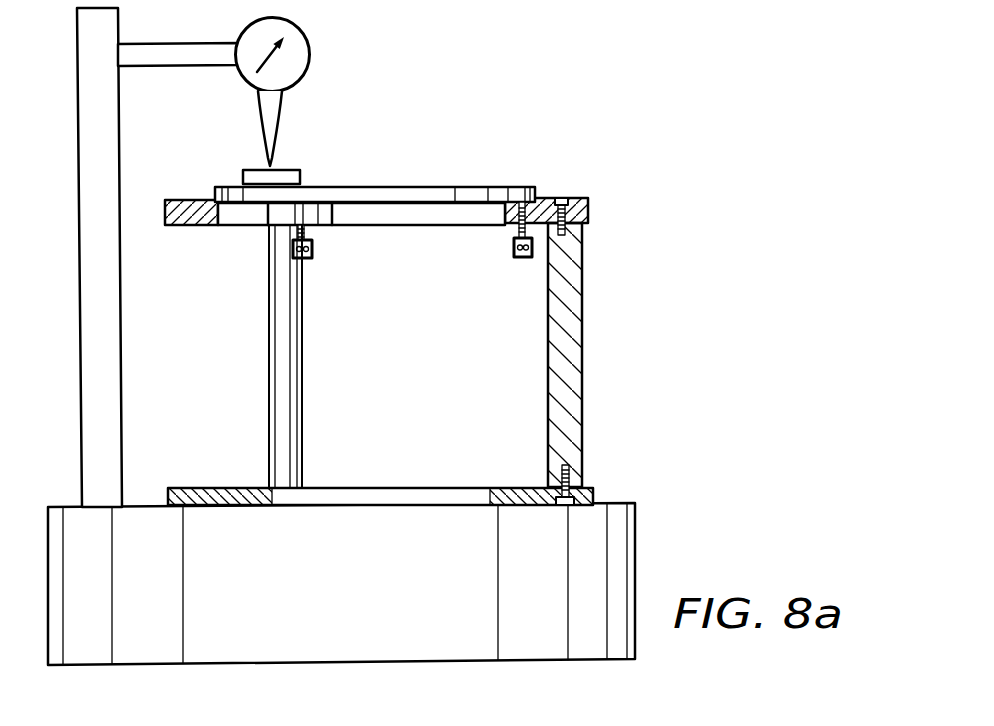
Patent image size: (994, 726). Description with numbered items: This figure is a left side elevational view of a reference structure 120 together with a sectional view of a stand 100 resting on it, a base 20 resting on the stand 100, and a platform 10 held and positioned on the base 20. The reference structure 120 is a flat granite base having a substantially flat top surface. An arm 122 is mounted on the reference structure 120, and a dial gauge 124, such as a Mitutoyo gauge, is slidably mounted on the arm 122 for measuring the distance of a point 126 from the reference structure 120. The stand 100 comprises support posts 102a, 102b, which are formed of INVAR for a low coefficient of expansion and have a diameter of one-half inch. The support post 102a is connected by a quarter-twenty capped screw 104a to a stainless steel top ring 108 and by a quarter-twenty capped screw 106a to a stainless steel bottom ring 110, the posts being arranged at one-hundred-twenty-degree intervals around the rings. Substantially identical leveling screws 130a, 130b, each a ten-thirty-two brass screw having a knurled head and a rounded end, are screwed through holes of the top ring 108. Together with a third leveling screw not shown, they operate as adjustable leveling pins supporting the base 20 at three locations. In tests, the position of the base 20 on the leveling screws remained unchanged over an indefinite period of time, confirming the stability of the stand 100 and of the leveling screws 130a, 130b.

The platform 10 is at (252, 167).
The base 20 is at (390, 185).
The stand 100 is at (620, 381).
The support post 102a is at (583, 262).
The support post 102b is at (270, 402).
The capped screw 104a is at (562, 197).
The capped screw 106a is at (560, 503).
The top ring 108 is at (422, 222).
The bottom ring 110 is at (417, 492).
The reference structure 120 is at (357, 597).
The arm 122 is at (82, 398).
The dial gauge 124 is at (308, 50).
The point 126 is at (276, 143).
The leveling screw 130a is at (513, 258).
The leveling screw 130b is at (312, 258).